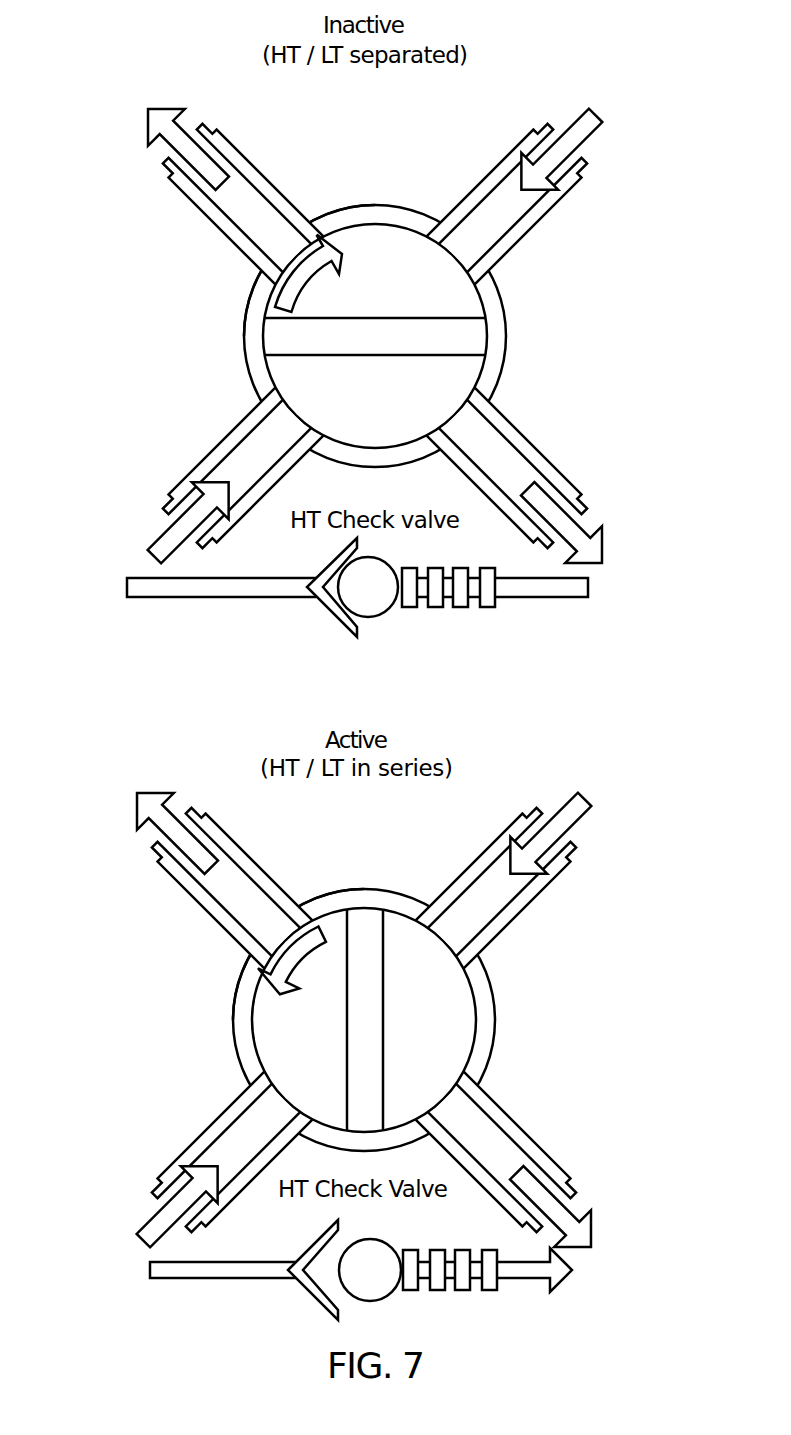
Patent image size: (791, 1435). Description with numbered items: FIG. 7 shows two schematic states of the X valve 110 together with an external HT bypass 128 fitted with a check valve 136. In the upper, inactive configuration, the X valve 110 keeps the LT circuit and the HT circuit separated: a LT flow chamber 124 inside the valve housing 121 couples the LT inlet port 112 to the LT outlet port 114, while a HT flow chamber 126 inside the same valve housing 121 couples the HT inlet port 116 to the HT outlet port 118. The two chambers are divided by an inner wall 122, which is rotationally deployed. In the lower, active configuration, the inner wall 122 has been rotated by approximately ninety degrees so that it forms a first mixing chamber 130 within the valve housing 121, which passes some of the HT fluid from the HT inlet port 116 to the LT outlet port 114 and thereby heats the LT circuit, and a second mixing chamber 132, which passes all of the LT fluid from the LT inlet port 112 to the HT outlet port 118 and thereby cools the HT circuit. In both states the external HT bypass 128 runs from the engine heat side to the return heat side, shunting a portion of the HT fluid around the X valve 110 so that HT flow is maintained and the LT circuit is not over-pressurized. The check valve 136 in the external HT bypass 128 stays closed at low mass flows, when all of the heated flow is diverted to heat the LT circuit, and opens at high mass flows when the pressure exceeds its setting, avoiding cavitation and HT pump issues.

The X valve 110 is at (341, 607).
The LT inlet port 112 is at (612, 70).
The LT outlet port 114 is at (137, 70).
The HT inlet port 116 is at (57, 538).
The HT outlet port 118 is at (572, 485).
The valve housing 121 is at (240, 282).
The inner wall 122 is at (238, 345).
The LT flow chamber 124 is at (470, 287).
The HT flow chamber 126 is at (470, 376).
The external HT bypass 128 is at (257, 598).
The first mixing chamber 130 is at (335, 1005).
The second mixing chamber 132 is at (407, 1050).
The check valve 136 is at (337, 618).